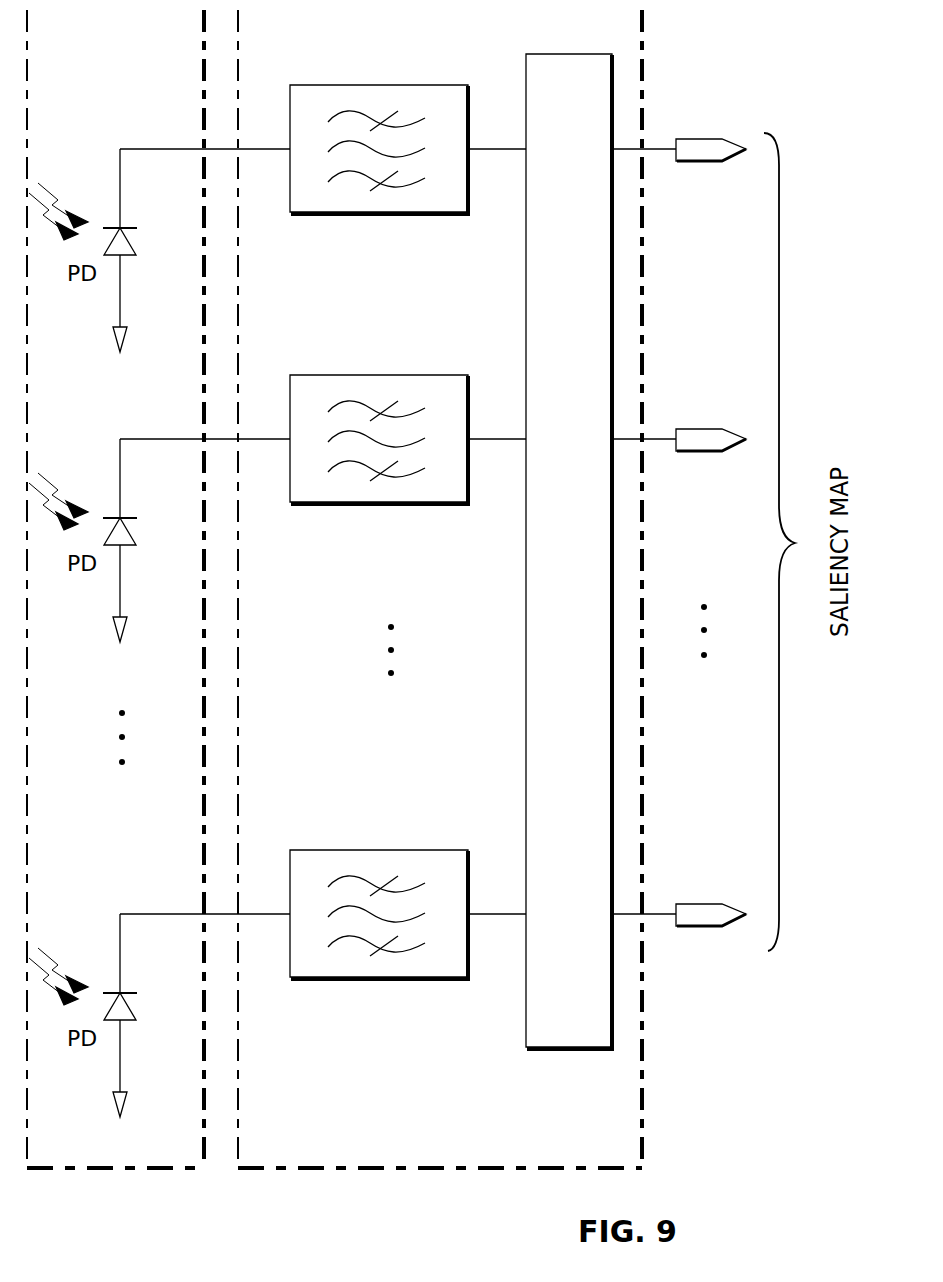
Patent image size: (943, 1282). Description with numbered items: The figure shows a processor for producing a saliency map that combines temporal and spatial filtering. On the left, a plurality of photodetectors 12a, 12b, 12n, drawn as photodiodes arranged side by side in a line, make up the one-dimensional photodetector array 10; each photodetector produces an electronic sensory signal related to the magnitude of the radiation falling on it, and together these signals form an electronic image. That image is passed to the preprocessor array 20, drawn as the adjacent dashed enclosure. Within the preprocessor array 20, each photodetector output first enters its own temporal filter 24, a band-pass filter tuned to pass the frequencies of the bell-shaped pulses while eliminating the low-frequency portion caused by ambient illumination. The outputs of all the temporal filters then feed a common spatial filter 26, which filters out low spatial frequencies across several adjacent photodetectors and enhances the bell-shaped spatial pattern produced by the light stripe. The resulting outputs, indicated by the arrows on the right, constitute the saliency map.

The 1D photodetector array 10 is at (116, 1172).
The preprocessor array 20 is at (428, 1172).
The photodetector 12a is at (133, 242).
The photodetector 12b is at (133, 532).
The photodetector 12n is at (133, 1007).
The temporal filter 24 is at (427, 83).
The spatial filter 26 is at (527, 730).